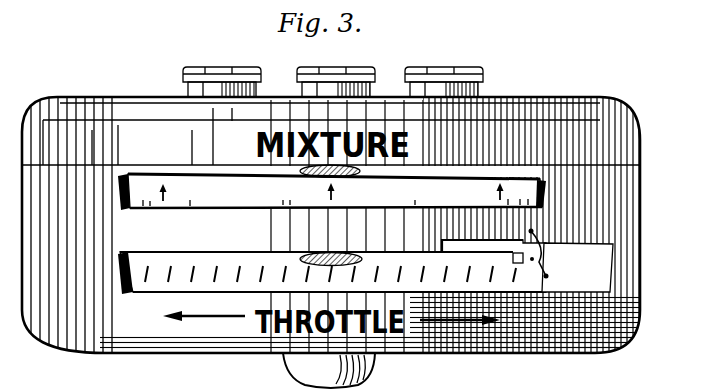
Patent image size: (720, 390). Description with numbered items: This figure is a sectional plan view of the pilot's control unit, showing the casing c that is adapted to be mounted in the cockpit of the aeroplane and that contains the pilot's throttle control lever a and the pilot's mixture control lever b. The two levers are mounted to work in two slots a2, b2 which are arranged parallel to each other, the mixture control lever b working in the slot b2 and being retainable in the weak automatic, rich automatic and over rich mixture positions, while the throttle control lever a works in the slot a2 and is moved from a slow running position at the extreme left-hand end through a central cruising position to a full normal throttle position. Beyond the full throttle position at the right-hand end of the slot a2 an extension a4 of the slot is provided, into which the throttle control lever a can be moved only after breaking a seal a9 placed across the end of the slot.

The throttle control lever a is at (312, 253).
The slot a2 is at (204, 257).
The extension of the slot a4 is at (614, 247).
The seal a9 is at (656, 165).
The mixture control lever b is at (301, 178).
The slot b2 is at (153, 170).
The casing c is at (523, 100).